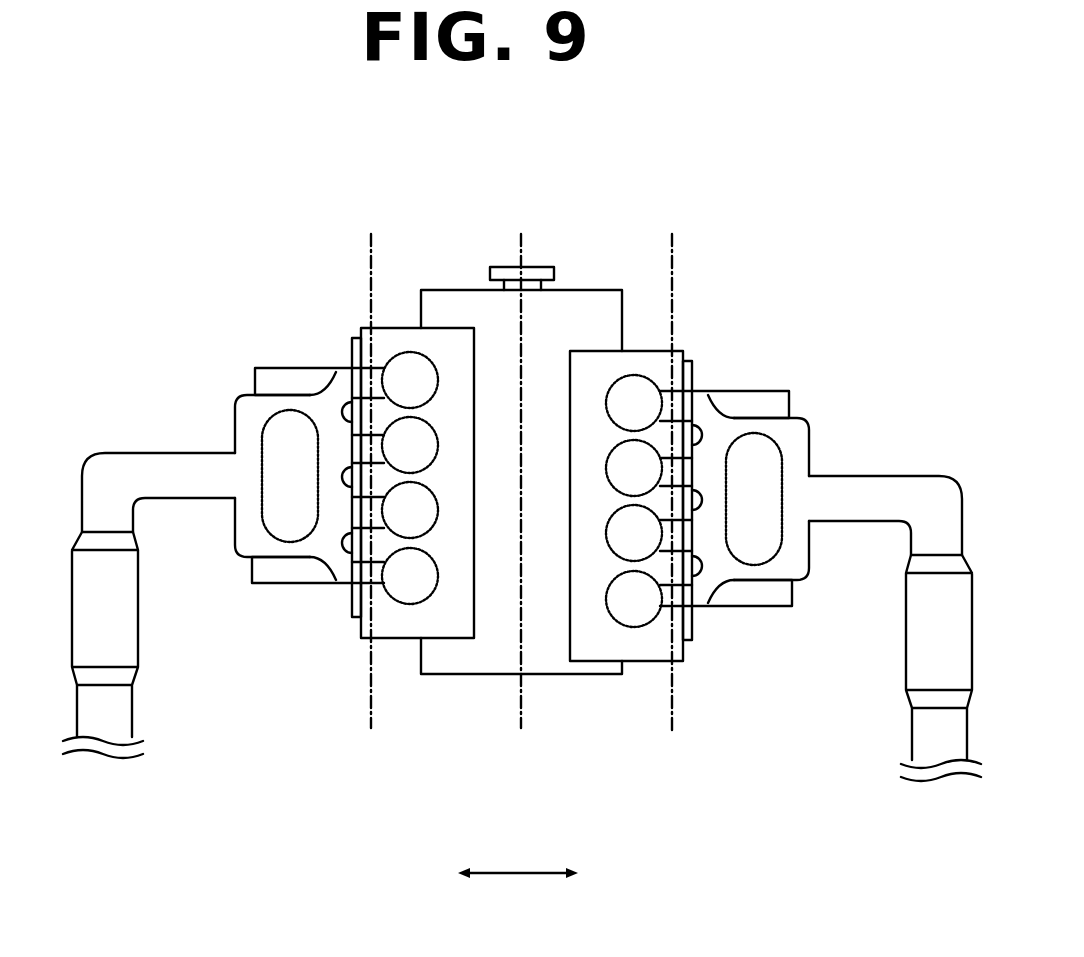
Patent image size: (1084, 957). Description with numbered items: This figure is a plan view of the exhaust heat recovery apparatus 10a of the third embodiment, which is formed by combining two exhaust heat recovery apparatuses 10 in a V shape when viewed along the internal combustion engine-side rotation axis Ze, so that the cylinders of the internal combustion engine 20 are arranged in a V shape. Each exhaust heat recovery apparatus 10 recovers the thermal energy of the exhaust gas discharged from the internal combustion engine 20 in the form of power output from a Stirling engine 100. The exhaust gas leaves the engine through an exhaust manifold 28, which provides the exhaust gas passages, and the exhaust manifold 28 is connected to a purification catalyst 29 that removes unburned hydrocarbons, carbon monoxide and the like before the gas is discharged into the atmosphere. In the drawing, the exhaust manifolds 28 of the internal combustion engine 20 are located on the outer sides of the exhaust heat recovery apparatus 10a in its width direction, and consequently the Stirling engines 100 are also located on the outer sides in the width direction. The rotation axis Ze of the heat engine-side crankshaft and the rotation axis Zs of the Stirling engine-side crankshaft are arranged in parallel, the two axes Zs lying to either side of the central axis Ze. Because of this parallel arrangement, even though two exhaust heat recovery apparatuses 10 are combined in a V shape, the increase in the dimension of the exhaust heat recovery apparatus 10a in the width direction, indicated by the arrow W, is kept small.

The exhaust heat recovery apparatus 10a is at (292, 205).
The exhaust heat recovery apparatus 10 is at (482, 730).
The internal combustion engine 20 is at (393, 627).
The exhaust manifold 28 is at (248, 430).
The purification catalyst 29 is at (125, 633).
The Stirling engine 100 is at (270, 376).
The internal combustion engine-side rotation axis Ze is at (522, 232).
The Stirling engine-side rotation axis Zs is at (372, 232).
The width direction W is at (518, 890).